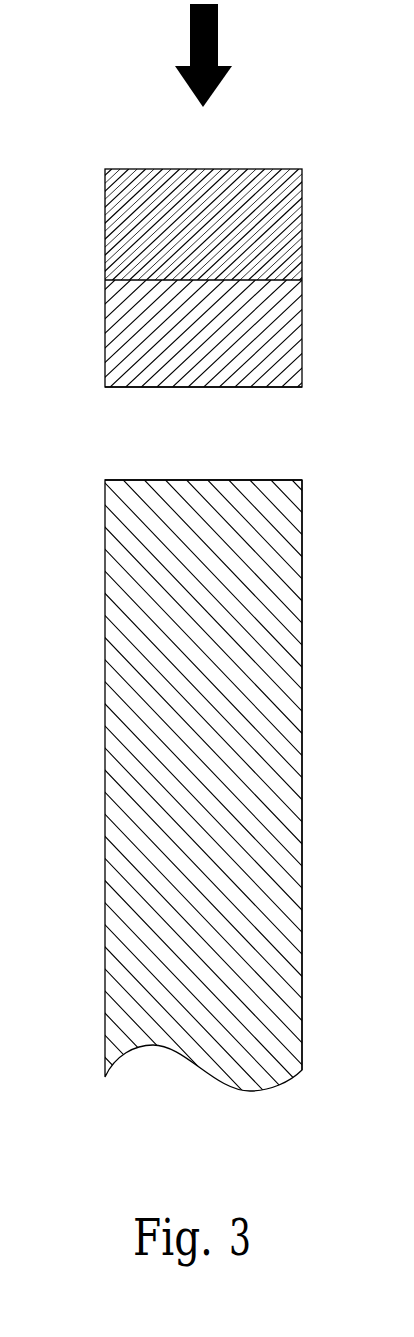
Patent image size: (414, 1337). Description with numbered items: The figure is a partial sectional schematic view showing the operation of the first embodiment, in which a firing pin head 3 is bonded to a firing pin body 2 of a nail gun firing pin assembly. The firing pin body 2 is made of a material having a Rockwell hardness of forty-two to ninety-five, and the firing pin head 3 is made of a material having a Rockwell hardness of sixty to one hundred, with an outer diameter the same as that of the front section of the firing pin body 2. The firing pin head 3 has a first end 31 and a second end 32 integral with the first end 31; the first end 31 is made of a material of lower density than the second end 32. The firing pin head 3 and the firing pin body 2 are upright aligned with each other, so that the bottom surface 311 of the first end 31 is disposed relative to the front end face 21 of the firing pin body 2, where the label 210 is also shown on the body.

The firing pin body 2 is at (130, 822).
The front end face 21 is at (148, 480).
The side surface of substrate 210 is at (358, 775).
The firing pin head 3 is at (207, 309).
The first end 31 is at (285, 316).
The bottom surface 311 is at (230, 388).
The second end 32 is at (285, 226).